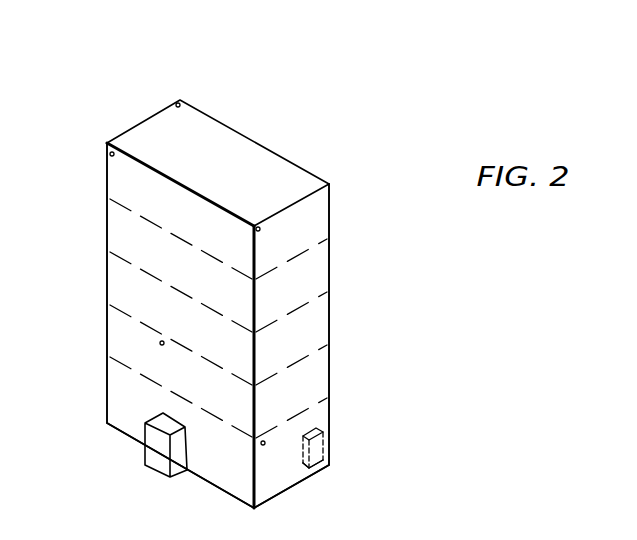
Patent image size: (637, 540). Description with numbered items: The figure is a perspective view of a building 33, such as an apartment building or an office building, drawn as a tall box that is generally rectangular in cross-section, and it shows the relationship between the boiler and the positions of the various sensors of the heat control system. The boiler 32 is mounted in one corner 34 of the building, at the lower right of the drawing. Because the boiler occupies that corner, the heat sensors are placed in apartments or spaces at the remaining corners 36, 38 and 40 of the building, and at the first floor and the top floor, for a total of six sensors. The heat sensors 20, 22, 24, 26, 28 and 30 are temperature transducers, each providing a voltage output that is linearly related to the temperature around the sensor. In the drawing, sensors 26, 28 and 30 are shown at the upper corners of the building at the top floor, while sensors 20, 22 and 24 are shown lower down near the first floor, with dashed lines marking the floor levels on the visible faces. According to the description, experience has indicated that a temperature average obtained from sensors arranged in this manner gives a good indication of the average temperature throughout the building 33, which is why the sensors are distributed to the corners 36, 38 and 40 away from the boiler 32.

The heat sensor 20 is at (114, 370).
The heat sensor 22 is at (160, 343).
The heat sensor 24 is at (263, 445).
The heat sensor 26 is at (111, 155).
The heat sensor 28 is at (177, 104).
The heat sensor 30 is at (257, 228).
The boiler 32 is at (330, 452).
The building 33 is at (330, 367).
The corner 34 is at (327, 467).
The corner 36 is at (107, 257).
The corner 38 is at (181, 100).
The corner 40 is at (252, 496).